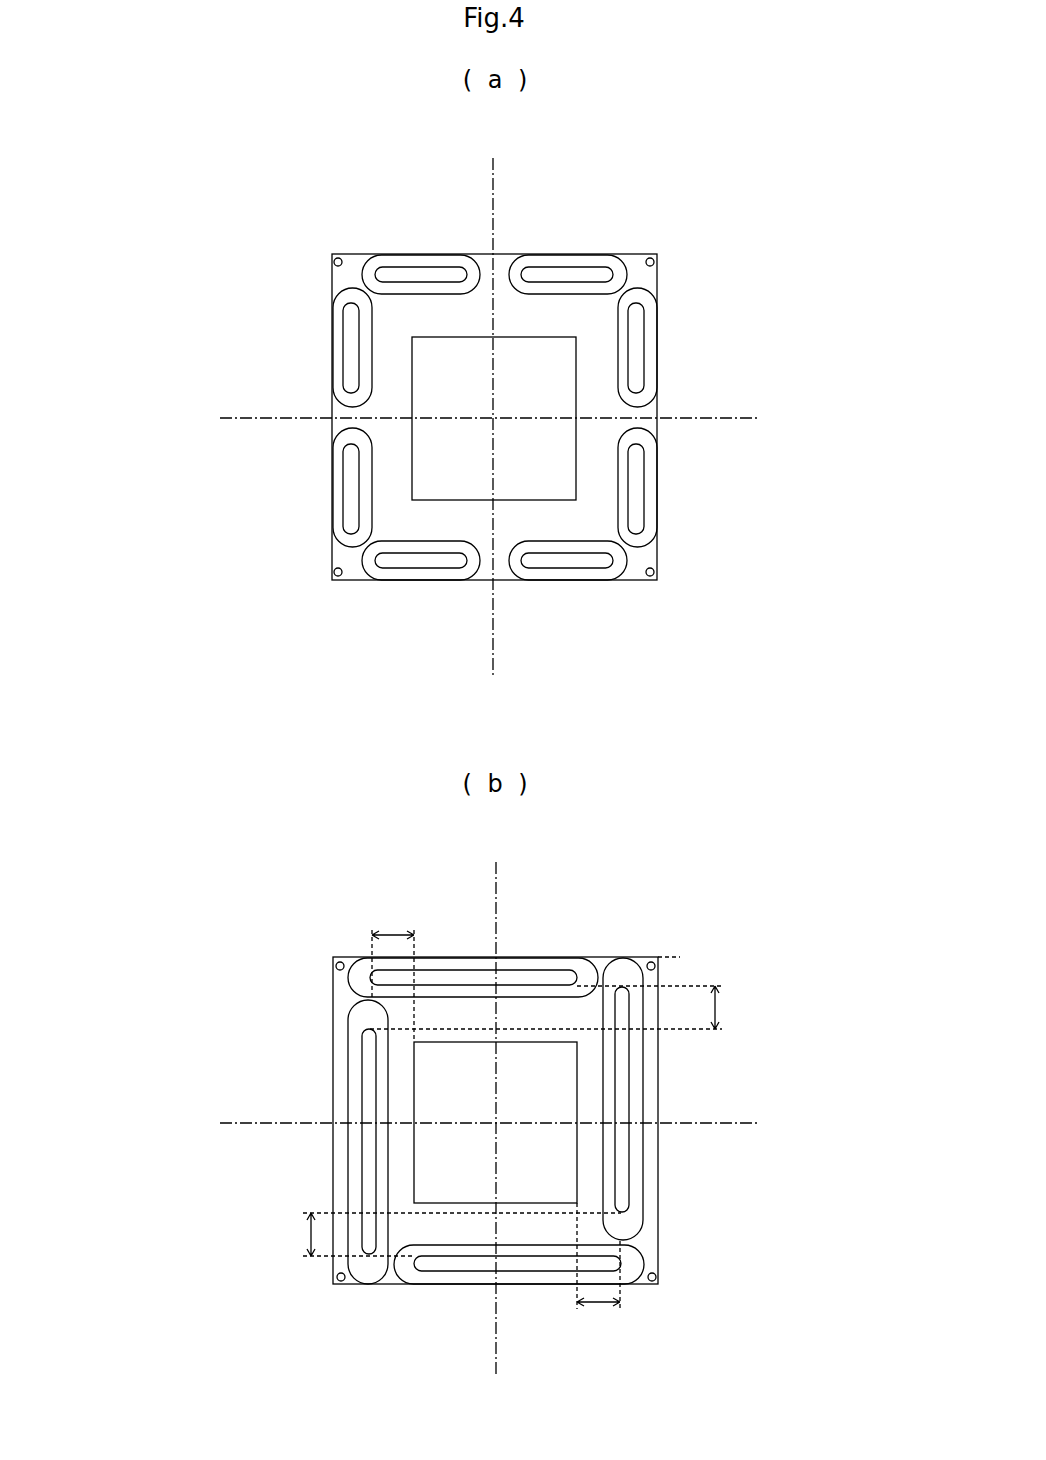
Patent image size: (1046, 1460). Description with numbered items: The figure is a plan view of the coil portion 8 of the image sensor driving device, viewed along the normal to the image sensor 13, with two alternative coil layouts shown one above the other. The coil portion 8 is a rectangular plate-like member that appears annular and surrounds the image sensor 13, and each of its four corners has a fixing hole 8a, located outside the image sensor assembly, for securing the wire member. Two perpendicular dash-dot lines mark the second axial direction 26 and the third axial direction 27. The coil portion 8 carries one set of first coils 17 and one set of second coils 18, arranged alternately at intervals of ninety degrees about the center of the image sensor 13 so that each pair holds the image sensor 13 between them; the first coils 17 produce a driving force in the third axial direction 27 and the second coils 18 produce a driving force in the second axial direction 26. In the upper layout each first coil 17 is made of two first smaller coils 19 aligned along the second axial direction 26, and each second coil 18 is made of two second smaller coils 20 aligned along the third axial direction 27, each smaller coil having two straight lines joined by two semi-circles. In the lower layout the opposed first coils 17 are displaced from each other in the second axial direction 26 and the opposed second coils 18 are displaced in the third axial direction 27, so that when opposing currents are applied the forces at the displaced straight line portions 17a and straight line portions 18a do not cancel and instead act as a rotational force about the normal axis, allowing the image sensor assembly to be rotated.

The coil portion 8 is at (330, 253).
The fixing hole 8a is at (335, 258).
The image sensor 13 is at (542, 457).
The first coil 17 is at (496, 747).
The straight line portion 17a is at (496, 1120).
The second coil 18 is at (481, 786).
The straight line portion 18a is at (513, 1121).
The first smaller coil 19 is at (472, 267).
The second smaller coil 20 is at (337, 375).
The second axial direction 26 is at (755, 420).
The third axial direction 27 is at (492, 173).